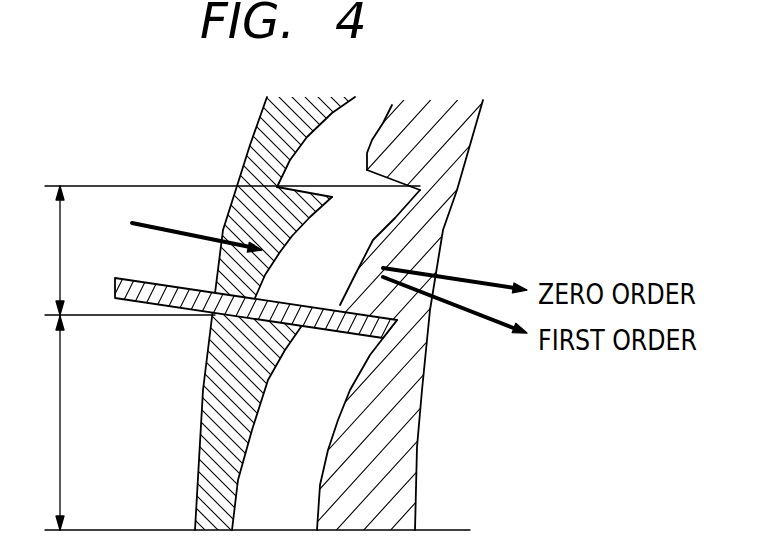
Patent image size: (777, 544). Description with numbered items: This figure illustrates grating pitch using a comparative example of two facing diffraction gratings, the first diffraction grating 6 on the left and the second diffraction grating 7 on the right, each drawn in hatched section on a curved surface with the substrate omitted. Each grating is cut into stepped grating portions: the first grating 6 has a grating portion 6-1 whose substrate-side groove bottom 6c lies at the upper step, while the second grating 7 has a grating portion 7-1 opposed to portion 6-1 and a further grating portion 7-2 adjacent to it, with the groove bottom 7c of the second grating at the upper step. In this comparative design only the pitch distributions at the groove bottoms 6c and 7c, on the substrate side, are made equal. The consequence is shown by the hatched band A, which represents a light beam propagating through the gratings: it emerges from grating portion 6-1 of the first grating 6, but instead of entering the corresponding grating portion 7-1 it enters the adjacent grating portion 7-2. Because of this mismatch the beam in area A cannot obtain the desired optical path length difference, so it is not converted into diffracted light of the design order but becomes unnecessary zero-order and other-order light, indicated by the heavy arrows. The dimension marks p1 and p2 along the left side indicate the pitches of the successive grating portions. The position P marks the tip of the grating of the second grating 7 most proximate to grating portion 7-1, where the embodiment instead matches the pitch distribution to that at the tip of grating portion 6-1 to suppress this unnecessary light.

The first diffraction grating 6 is at (242, 272).
The second diffraction grating 7 is at (420, 272).
The groove bottom of grating 6 6c is at (257, 173).
The grating portion of grating 6 6-1 is at (262, 285).
The grating portion of grating 7 7-1 is at (393, 220).
The adjacent grating portion of grating 7 7-2 is at (347, 413).
The groove bottom of grating 7 7c is at (423, 189).
The position of grating tip P is at (385, 124).
The hatching area of light beam A is at (125, 278).
The grating pitch p1 is at (47, 422).
The grating pitch p2 is at (47, 250).